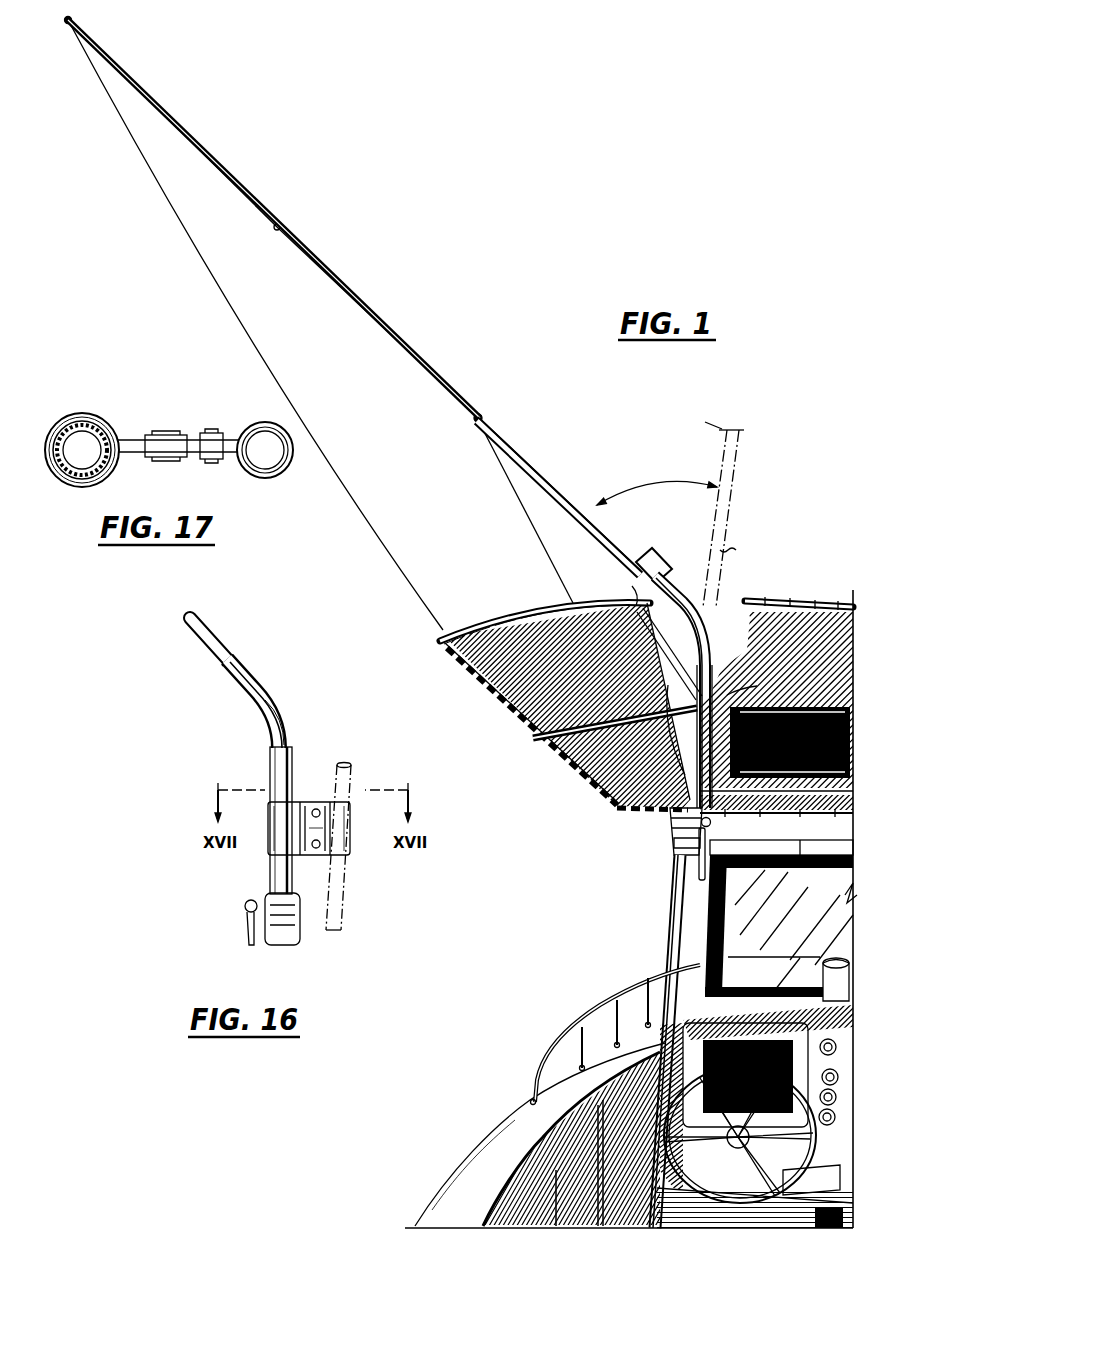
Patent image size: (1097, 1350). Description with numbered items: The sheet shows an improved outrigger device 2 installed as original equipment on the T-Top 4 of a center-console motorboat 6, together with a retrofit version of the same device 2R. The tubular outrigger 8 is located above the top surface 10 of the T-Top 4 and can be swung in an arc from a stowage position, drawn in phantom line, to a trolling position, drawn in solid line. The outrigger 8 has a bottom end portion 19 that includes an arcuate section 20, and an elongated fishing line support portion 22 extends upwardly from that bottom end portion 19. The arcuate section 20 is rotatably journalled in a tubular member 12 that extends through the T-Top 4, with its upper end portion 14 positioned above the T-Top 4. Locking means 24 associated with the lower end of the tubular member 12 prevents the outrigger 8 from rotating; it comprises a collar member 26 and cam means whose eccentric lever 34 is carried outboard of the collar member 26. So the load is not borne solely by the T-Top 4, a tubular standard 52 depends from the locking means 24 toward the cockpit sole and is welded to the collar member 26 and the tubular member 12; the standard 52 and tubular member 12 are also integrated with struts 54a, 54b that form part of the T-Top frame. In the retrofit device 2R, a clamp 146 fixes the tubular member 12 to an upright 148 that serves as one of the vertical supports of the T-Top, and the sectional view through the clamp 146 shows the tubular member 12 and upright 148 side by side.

In FIG. 1, the outrigger device 2 is at (647, 1041).
In FIG. 1, the T-Top 4 is at (790, 594).
In FIG. 1, the motorboat 6 is at (485, 1127).
In FIG. 1, the outrigger 8 is at (550, 455).
In FIG. 16, the outrigger 8 is at (250, 657).
In FIG. 1, the top surface 10 is at (521, 612).
In FIG. 1, the tubular member 12 is at (722, 656).
In FIG. 16, the tubular member 12 is at (297, 766).
In FIG. 17, the tubular member 12 is at (98, 420).
In FIG. 1, the upper end portion 14 is at (688, 680).
In FIG. 1, the bottom end portion 19 is at (653, 548).
In FIG. 1, the arcuate section 20 is at (672, 596).
In FIG. 16, the arcuate section 20 is at (256, 686).
In FIG. 17, the arcuate section 20 is at (80, 437).
In FIG. 1, the fishing line support portion 22 is at (517, 437).
In FIG. 16, the fishing line support portion 22 is at (208, 640).
In FIG. 1, the locking means 24 is at (660, 848).
In FIG. 16, the locking means 24 is at (236, 906).
In FIG. 1, the collar member 26 is at (670, 823).
In FIG. 16, the collar member 26 is at (282, 934).
In FIG. 1, the eccentric lever 34 is at (714, 826).
In FIG. 1, the tubular standard 52 is at (660, 873).
In FIG. 1, the strut 54a is at (613, 584).
In FIG. 1, the strut 54b is at (763, 685).
In FIG. 16, the clamp 146 is at (340, 842).
In FIG. 17, the clamp 146 is at (187, 437).
In FIG. 16, the upright 148 is at (352, 770).
In FIG. 17, the upright 148 is at (260, 430).
In FIG. 16, the retrofit device 2R is at (292, 709).